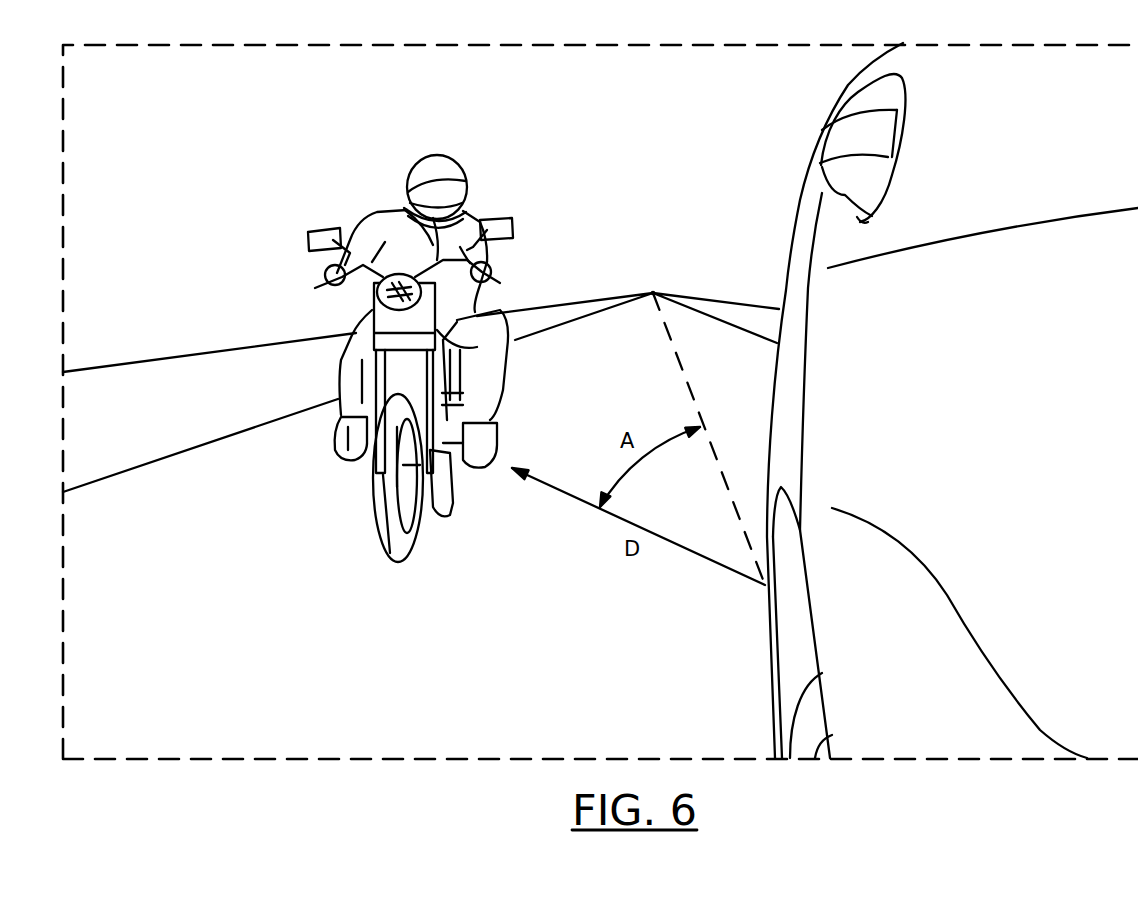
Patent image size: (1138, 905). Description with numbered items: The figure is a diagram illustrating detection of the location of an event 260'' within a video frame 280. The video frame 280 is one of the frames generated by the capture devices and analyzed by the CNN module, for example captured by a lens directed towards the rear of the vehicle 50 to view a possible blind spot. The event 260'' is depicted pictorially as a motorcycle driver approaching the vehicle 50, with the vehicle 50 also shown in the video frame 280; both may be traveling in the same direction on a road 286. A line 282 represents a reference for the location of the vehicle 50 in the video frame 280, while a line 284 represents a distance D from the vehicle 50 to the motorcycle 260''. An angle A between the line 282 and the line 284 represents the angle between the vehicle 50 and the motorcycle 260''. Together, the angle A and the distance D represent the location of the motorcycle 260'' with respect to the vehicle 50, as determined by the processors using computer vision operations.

The video frame 280 is at (213, 44).
The event 260'' is at (405, 348).
The vehicle 50 is at (795, 212).
The road 286 is at (653, 292).
The line 282 is at (687, 383).
The line 284 is at (563, 497).